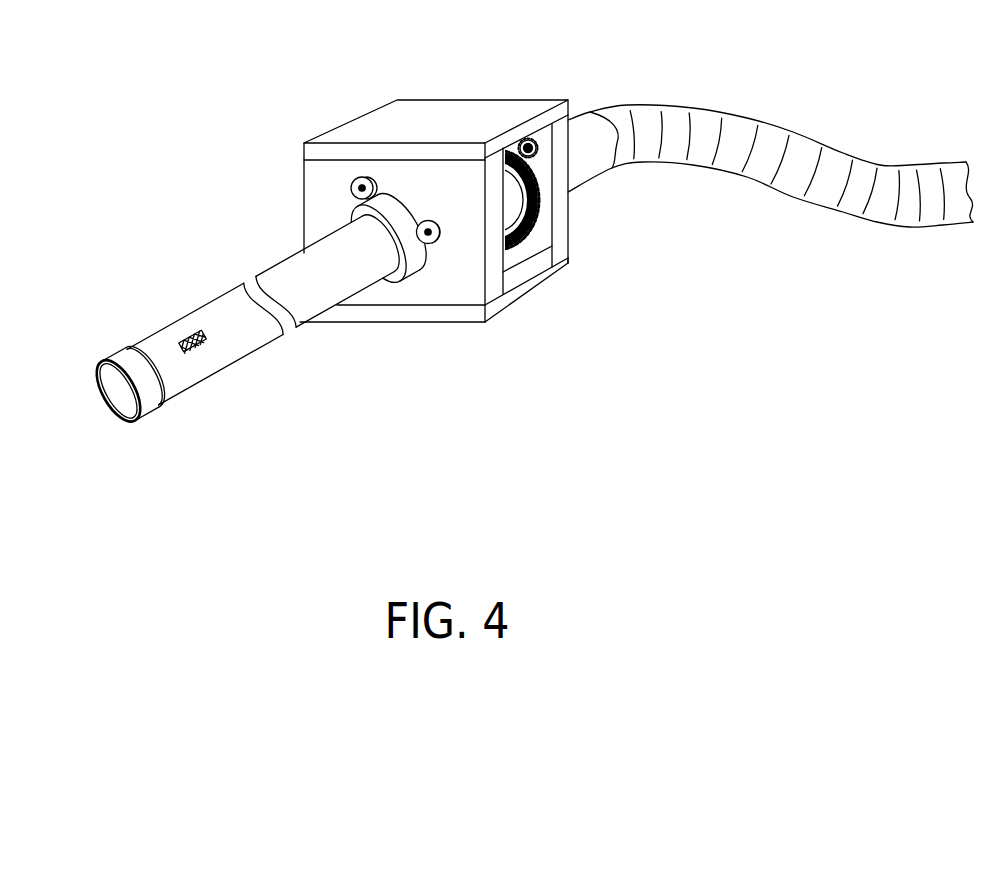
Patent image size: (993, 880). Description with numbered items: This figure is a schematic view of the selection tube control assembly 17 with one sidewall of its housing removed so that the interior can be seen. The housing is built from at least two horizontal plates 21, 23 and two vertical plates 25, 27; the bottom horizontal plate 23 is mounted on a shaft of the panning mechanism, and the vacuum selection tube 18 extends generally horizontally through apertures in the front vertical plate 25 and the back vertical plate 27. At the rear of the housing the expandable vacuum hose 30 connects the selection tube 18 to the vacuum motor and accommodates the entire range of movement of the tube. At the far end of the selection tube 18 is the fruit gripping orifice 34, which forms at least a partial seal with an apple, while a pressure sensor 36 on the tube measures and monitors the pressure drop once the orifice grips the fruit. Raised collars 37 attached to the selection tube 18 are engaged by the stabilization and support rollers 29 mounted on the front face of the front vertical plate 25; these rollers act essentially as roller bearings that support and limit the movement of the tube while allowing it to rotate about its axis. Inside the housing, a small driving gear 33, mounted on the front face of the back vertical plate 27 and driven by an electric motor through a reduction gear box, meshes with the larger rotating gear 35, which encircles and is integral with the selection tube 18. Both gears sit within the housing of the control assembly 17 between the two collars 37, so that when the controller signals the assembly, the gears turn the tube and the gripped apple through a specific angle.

The selection tube control assembly 17 is at (199, 101).
The vacuum selection tube 18 is at (315, 287).
The horizontal plate 21 is at (423, 131).
The bottom horizontal plate 23 is at (538, 295).
The front vertical plate 25 is at (439, 192).
The back vertical plate 27 is at (568, 230).
The stabilization and support rollers 29 is at (351, 193).
The expandable vacuum hose 30 is at (673, 107).
The driving gear 33 is at (578, 96).
The fruit gripping orifice 34 is at (110, 358).
The rotating gear 35 is at (533, 185).
The pressure sensor 36 is at (188, 337).
The raised collars 37 is at (430, 268).